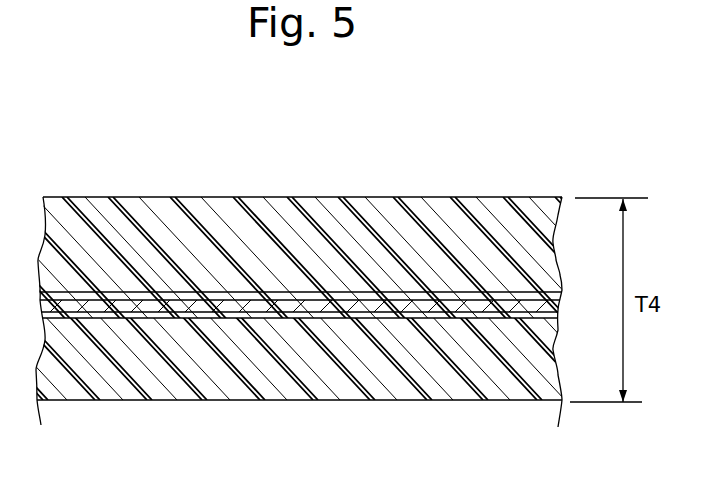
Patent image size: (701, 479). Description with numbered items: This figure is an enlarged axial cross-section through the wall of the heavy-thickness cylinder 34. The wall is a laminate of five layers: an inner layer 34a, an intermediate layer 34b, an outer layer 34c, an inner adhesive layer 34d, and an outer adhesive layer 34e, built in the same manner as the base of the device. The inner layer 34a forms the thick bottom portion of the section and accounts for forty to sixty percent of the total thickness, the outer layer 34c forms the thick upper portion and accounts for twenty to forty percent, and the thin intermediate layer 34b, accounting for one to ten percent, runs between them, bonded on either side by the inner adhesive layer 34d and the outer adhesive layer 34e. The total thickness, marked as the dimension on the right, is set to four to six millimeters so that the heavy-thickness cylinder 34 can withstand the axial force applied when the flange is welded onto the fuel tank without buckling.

The heavy-thickness cylinder 34 is at (350, 267).
The inner layer 34a is at (362, 338).
The intermediate layer 34b is at (222, 299).
The outer layer 34c is at (81, 206).
The inner adhesive layer 34d is at (288, 318).
The outer adhesive layer 34e is at (154, 292).